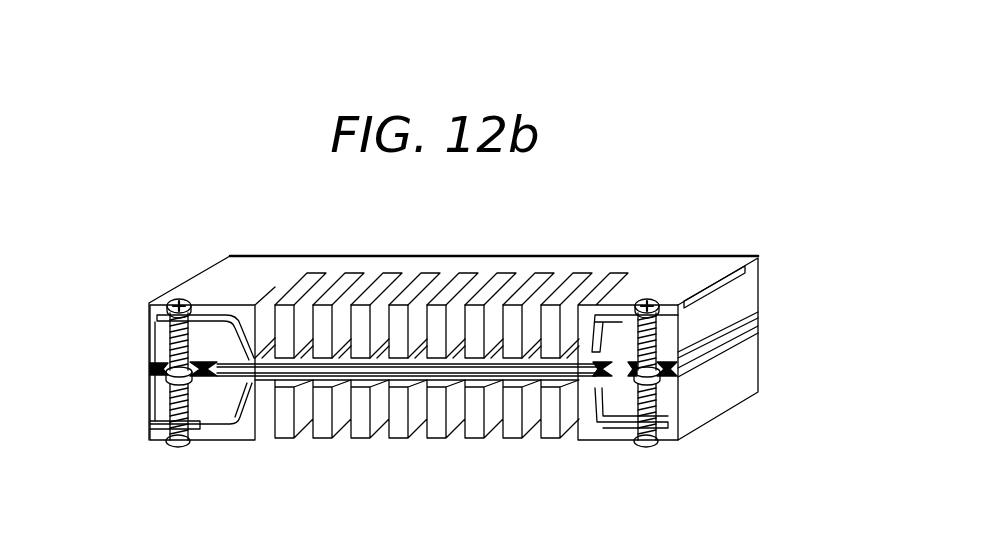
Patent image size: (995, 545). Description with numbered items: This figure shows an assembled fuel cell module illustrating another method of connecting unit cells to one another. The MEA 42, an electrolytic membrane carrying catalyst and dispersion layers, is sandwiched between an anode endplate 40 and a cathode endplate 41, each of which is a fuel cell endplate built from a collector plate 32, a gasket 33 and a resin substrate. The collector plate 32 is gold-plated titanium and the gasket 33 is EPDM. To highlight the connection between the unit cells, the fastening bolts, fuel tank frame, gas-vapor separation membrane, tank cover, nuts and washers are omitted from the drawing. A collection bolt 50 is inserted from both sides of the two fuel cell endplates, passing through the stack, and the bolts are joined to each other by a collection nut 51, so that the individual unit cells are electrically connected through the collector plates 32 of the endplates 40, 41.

The cathode endplate 41 is at (226, 272).
The anode endplate 40 is at (157, 403).
The MEA 42 is at (548, 378).
The gasket 33 is at (150, 371).
The collector plate 32 is at (599, 353).
The collection bolt 50 is at (170, 301).
The collection nut 51 is at (656, 376).